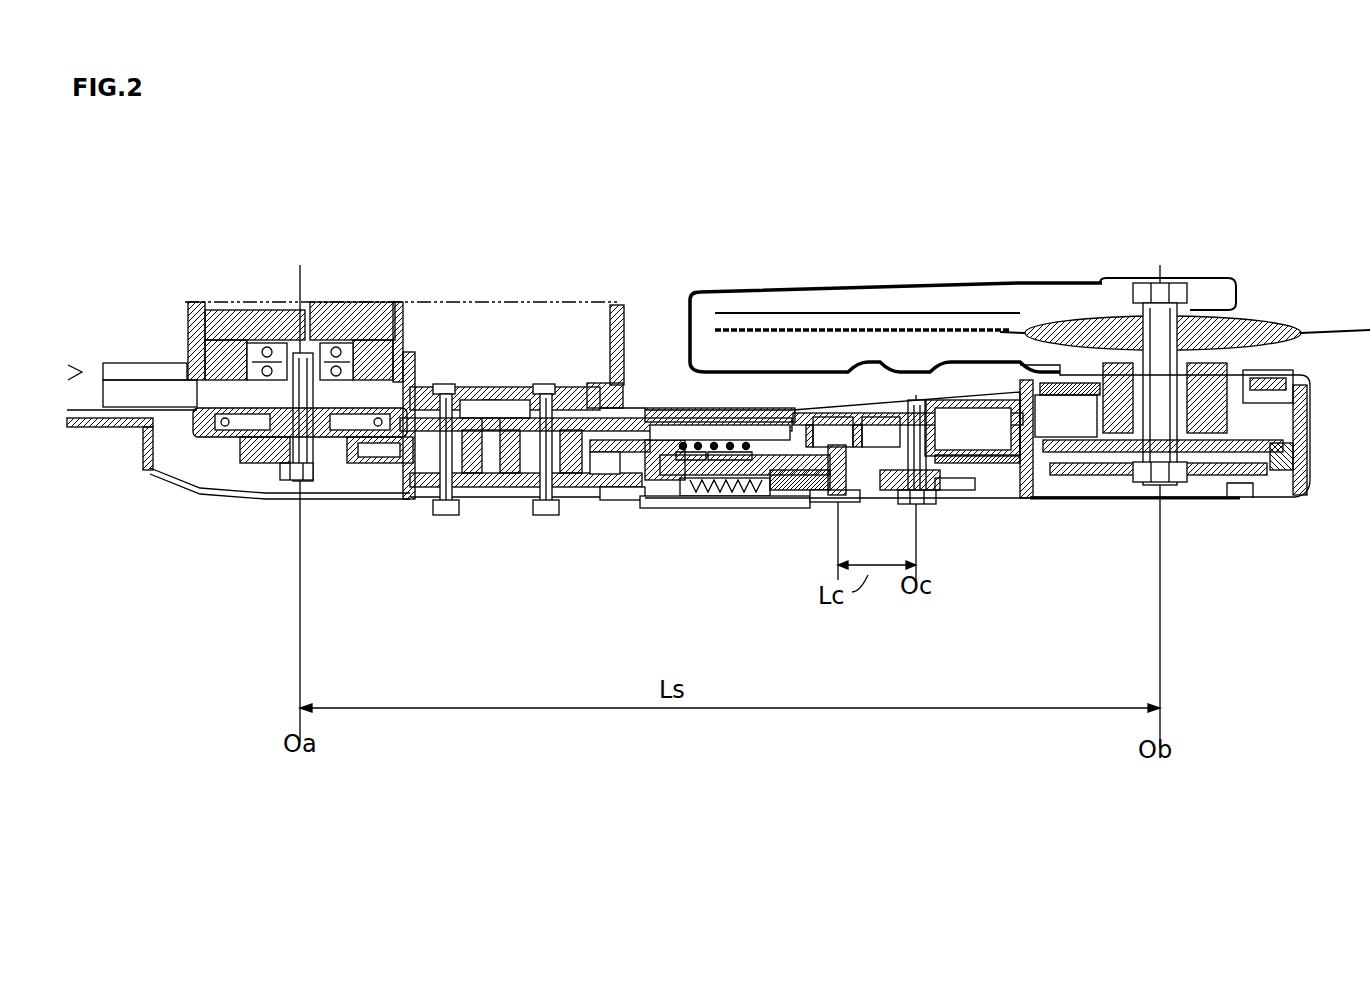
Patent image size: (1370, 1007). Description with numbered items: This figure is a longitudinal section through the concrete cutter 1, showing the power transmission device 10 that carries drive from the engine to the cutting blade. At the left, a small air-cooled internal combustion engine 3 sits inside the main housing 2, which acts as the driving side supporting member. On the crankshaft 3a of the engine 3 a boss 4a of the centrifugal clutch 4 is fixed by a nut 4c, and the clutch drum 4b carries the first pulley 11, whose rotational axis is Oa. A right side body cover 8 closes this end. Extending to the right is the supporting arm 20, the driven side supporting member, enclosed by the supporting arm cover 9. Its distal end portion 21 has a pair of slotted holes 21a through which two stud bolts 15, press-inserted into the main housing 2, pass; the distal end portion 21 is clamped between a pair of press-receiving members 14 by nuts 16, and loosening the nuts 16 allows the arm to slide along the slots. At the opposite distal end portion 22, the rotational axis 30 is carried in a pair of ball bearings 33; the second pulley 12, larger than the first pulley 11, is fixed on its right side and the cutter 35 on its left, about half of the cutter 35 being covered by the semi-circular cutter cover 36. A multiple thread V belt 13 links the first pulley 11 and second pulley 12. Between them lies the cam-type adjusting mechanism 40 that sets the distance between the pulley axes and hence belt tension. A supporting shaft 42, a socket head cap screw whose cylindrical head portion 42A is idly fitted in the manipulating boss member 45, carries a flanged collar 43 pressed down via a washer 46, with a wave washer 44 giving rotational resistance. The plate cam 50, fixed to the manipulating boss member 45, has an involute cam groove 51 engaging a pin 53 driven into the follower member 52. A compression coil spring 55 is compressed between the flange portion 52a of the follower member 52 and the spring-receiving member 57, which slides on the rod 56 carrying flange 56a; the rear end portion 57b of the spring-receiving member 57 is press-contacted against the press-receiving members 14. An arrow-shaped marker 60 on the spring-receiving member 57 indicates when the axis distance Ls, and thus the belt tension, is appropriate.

The concrete cutter 1 is at (488, 252).
The main housing 2 is at (622, 340).
The internal combustion engine 3 is at (188, 318).
The crankshaft 3a is at (268, 380).
The centrifugal clutch 4 is at (195, 497).
The boss 4a is at (340, 378).
The clutch drum 4b is at (150, 470).
The nut 4c is at (285, 470).
The right side body cover 8 is at (327, 505).
The supporting arm cover 9 is at (1063, 500).
The power transmission device 10 is at (362, 475).
The first pulley 11 is at (258, 500).
The second pulley 12 is at (1238, 498).
The multiple thread V belt 13 is at (398, 482).
The press-receiving members 14 is at (605, 410).
The stud bolts 15 is at (440, 386).
The nut 16 is at (440, 516).
The supporting arm 20 is at (765, 413).
The distal end portion 21 is at (488, 500).
The slotted holes 21a is at (508, 388).
The distal end portion 22 is at (1290, 358).
The rotational axis 30 is at (1305, 440).
The ball bearings 33 is at (1067, 410).
The cutter 35 is at (878, 330).
The semi-circular cutter cover 36 is at (942, 286).
The cam-type adjusting mechanism 40 is at (778, 442).
The supporting shaft 42 is at (932, 455).
The head portion 42A is at (925, 505).
The flanged collar 43 is at (960, 462).
The wave washer 44 is at (876, 432).
The manipulating boss member 45 is at (950, 500).
The washer 46 is at (905, 500).
The plate cam 50 is at (962, 490).
The involute cam groove 51 is at (829, 431).
The follower member 52 is at (800, 505).
The flange portion 52a is at (750, 512).
The pin 53 is at (838, 498).
The compression coil spring 55 is at (716, 442).
The rod 56 is at (683, 440).
The flange 56a is at (600, 500).
The spring-receiving member 57 is at (640, 505).
The rear end portion 57b is at (655, 422).
The marker 60 is at (712, 512).